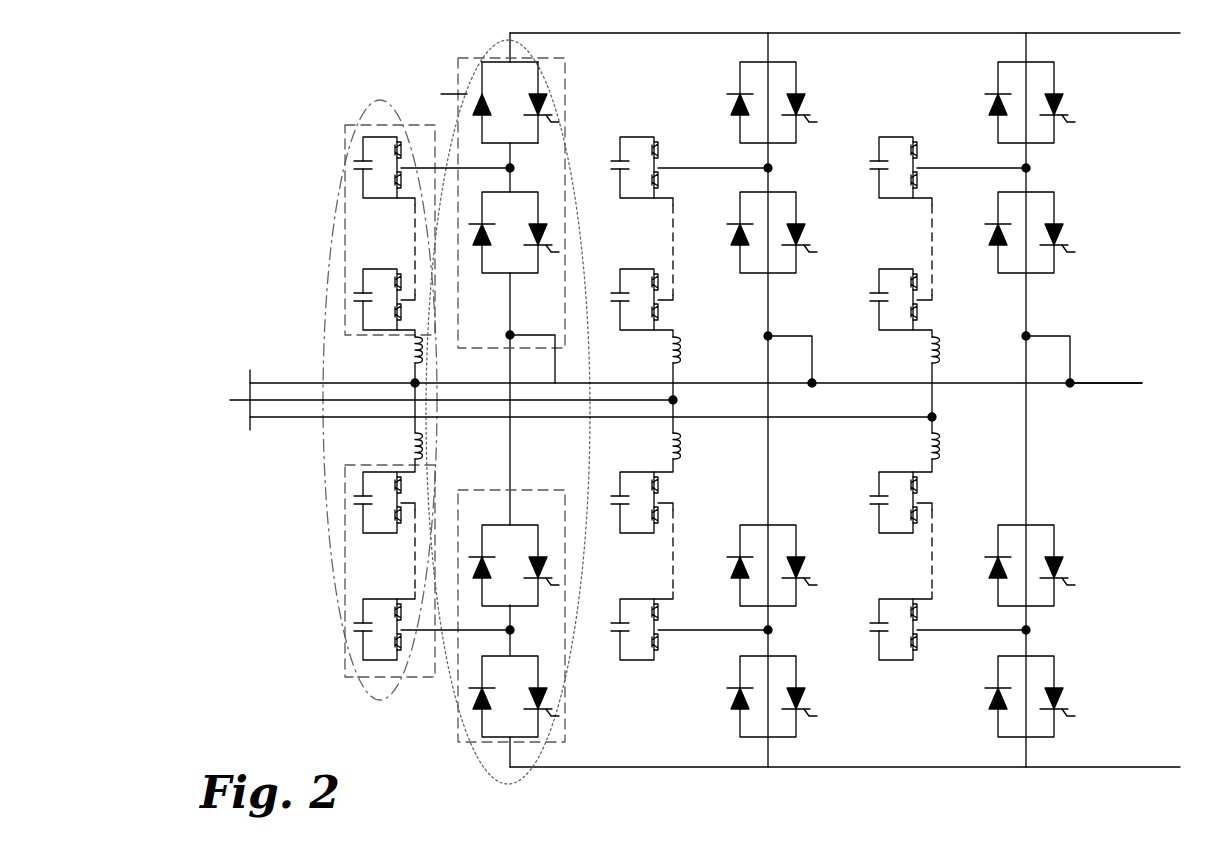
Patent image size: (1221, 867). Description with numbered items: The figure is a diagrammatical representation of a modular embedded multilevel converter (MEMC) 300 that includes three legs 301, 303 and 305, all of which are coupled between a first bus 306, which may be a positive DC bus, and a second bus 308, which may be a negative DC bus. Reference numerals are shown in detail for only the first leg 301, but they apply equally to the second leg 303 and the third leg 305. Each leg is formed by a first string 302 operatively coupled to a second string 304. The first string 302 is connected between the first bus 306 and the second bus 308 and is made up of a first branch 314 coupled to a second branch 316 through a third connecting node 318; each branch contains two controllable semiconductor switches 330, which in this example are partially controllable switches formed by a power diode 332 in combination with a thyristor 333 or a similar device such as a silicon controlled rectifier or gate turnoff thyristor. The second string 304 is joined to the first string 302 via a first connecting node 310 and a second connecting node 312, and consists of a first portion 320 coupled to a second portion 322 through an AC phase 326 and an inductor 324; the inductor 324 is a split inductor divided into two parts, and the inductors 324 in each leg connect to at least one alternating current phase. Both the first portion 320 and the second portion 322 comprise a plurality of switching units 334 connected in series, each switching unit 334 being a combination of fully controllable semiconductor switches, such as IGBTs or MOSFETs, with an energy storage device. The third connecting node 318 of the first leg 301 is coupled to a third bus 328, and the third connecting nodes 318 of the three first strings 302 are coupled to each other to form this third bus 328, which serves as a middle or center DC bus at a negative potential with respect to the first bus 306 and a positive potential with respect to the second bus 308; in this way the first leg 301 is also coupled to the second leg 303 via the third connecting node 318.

The modular embedded multilevel converter 300 is at (715, 396).
The first leg 301 is at (508, 46).
The first string 302 is at (488, 766).
The second leg 303 is at (768, 45).
The second string 304 is at (324, 320).
The third leg 305 is at (1026, 45).
The first bus 306 is at (1150, 33).
The second bus 308 is at (1150, 767).
The first connecting node 310 is at (508, 168).
The second connecting node 312 is at (510, 630).
The first branch 314 is at (526, 102).
The second branch 316 is at (456, 724).
The third connecting node 318 is at (508, 335).
The first portion 320 is at (389, 222).
The second portion 322 is at (342, 490).
The inductor 324 is at (410, 350).
The AC phase 326 is at (286, 383).
The third bus 328 is at (1118, 383).
The controllable semiconductor switch 330 is at (513, 189).
The power diode 332 is at (486, 104).
The thyristor 333 is at (540, 100).
The switching unit 334 is at (362, 204).